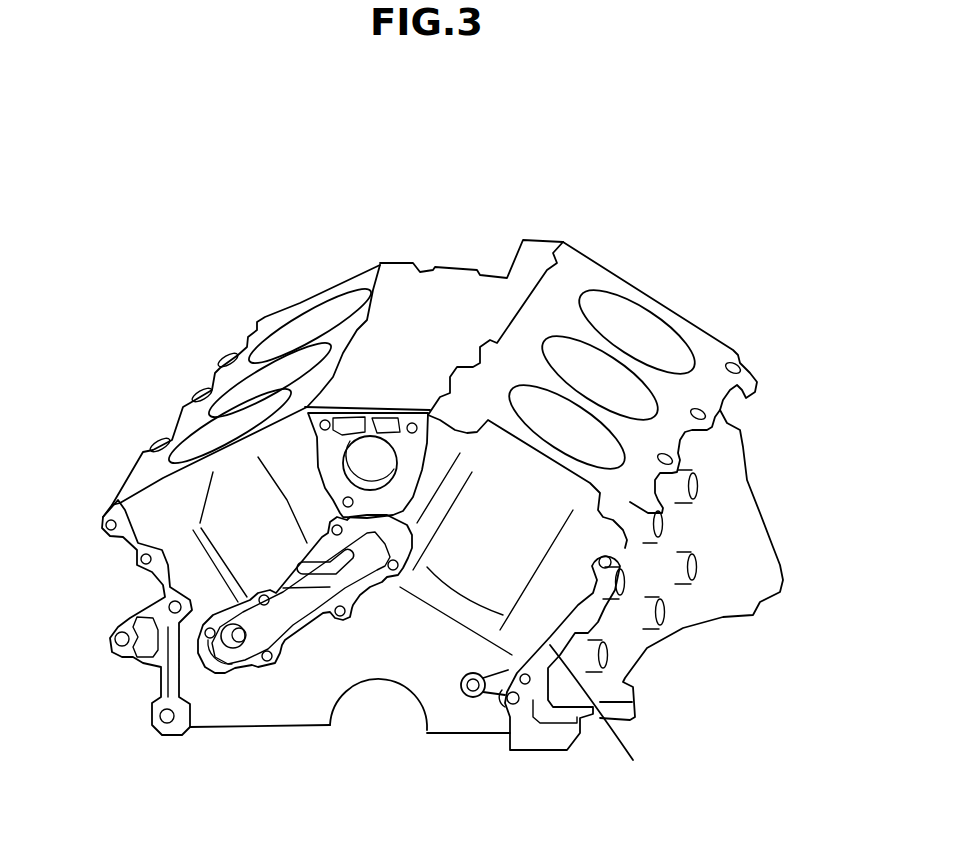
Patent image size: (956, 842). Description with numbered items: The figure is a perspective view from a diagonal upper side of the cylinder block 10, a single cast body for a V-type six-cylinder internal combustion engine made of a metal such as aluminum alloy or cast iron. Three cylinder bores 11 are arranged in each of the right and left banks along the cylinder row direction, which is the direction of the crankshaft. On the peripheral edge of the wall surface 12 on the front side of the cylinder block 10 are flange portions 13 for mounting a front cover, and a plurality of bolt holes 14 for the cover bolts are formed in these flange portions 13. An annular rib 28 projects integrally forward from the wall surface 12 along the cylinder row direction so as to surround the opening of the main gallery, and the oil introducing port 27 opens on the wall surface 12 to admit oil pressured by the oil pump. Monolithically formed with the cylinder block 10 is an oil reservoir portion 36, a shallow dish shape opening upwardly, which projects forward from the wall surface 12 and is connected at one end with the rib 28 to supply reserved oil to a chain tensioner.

The cylinder block 10 is at (446, 236).
The cylinder bore 11 is at (313, 330).
The wall surface 12 is at (378, 620).
The flange portion 13 is at (162, 678).
The bolt hole 14 is at (168, 607).
The oil introducing port 27 is at (235, 645).
The rib 28 is at (245, 665).
The oil reservoir portion 36 is at (323, 578).